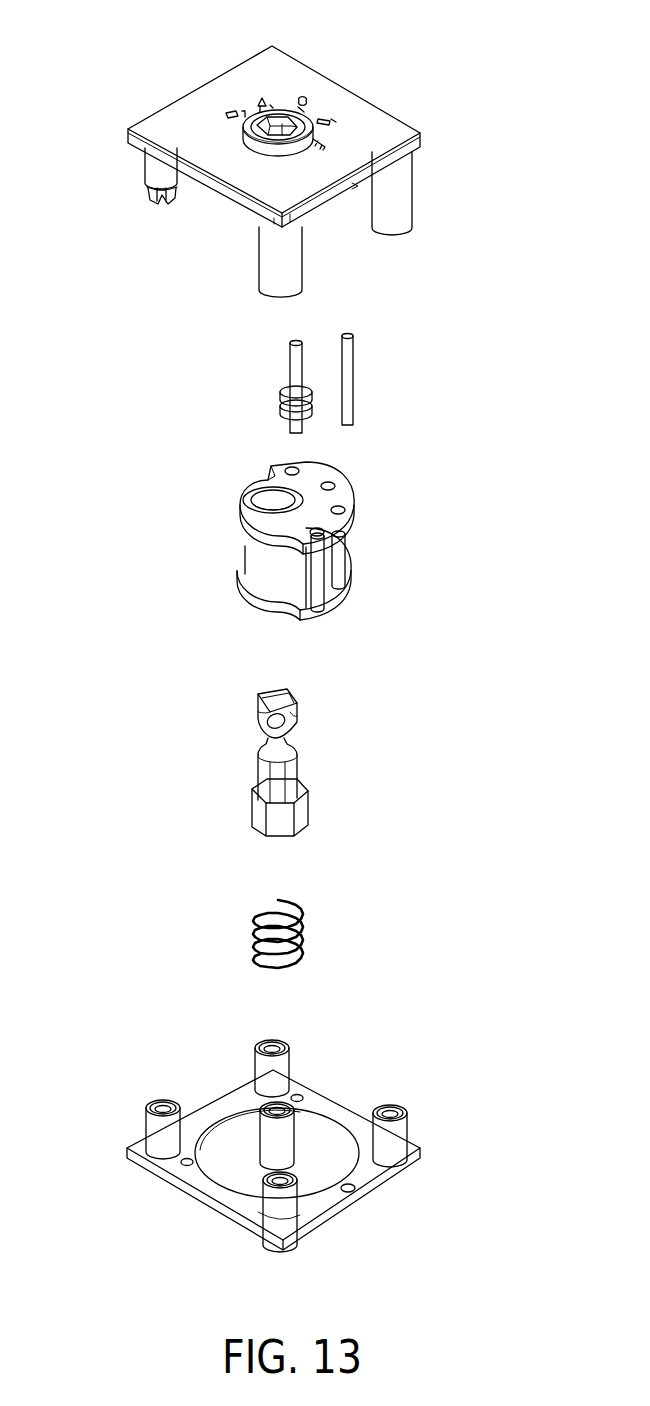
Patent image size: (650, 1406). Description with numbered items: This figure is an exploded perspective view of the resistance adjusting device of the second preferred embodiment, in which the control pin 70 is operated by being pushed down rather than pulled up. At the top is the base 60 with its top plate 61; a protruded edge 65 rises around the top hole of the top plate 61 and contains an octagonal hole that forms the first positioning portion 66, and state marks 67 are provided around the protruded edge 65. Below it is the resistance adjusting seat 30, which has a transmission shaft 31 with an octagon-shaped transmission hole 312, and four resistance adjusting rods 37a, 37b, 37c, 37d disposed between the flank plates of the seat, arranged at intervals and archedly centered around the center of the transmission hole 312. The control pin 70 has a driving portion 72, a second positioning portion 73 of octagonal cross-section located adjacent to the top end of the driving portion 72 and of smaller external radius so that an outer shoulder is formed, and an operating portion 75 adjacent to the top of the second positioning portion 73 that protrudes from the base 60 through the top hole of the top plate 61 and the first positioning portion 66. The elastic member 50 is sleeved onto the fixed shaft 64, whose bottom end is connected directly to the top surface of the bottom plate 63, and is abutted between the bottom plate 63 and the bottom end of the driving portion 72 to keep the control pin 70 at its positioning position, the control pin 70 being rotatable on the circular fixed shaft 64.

The base 60 is at (121, 80).
The top plate 61 is at (385, 132).
The protruded edge 65 is at (280, 112).
The first positioning portion 66 is at (263, 125).
The state marks 67 is at (333, 118).
The resistance adjusting seat 30 is at (397, 492).
The transmission shaft 31 is at (263, 563).
The transmission hole 312 is at (263, 500).
The resistance adjusting rod 37a is at (317, 593).
The resistance adjusting rod 37b is at (338, 565).
The resistance adjusting rod 37c is at (333, 480).
The resistance adjusting rod 37d is at (290, 470).
The control pin 70 is at (379, 736).
The driving portion 72 is at (257, 813).
The second positioning portion 73 is at (263, 770).
The operating portion 75 is at (262, 720).
The elastic member 50 is at (300, 910).
The bottom plate 63 is at (240, 1197).
The fixed shaft 64 is at (290, 1137).